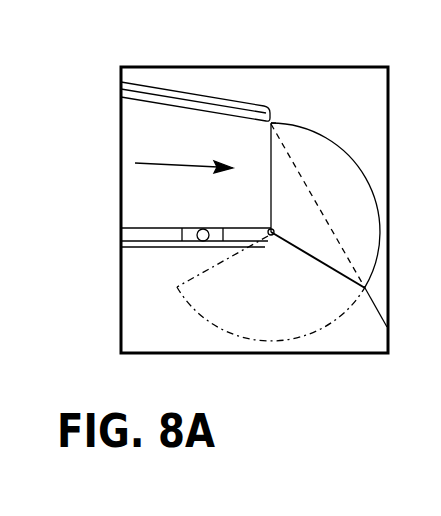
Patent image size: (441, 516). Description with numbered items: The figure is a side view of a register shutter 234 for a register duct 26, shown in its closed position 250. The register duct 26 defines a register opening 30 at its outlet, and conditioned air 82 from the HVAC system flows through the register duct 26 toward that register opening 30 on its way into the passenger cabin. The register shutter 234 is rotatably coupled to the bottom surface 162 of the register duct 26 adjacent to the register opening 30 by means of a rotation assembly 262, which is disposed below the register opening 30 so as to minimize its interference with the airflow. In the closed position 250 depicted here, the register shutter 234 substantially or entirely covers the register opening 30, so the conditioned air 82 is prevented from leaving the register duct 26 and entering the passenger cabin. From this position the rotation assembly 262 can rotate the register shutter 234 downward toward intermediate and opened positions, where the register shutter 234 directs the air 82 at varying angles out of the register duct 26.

The register duct 26 is at (150, 193).
The conditioned air 82 is at (178, 162).
The register opening 30 is at (273, 163).
The closed position 250 is at (287, 117).
The register shutter 234 is at (350, 203).
The bottom surface 162 is at (165, 249).
The rotation assembly 262 is at (271, 235).